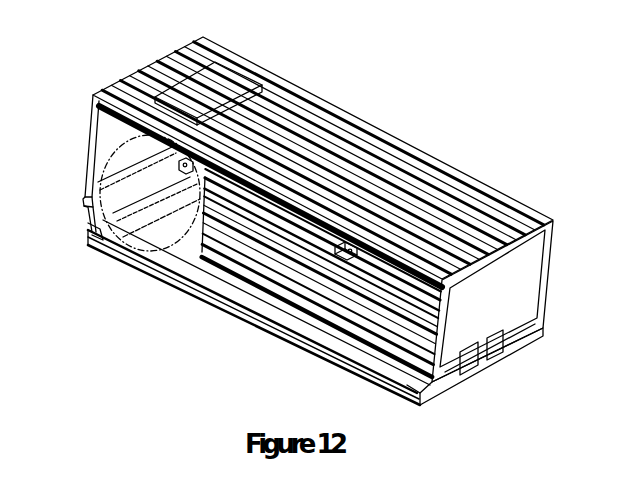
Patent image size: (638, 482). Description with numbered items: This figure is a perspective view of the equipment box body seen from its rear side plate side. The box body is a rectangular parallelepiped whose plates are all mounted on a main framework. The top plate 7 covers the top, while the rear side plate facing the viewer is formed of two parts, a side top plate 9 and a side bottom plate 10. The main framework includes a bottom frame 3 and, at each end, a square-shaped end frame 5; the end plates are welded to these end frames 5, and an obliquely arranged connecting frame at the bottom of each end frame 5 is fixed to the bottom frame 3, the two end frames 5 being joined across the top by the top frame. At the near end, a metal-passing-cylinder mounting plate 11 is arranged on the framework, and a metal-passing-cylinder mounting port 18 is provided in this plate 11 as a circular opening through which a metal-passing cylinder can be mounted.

The top plate 7 is at (127, 121).
The side top plate 9 is at (310, 263).
The side bottom plate 10 is at (213, 278).
The metal-passing-cylinder mounting plate 11 is at (103, 133).
The end frame 5 is at (110, 202).
The bottom frame 3 is at (125, 230).
The metal-passing-cylinder mounting port 18 is at (108, 243).